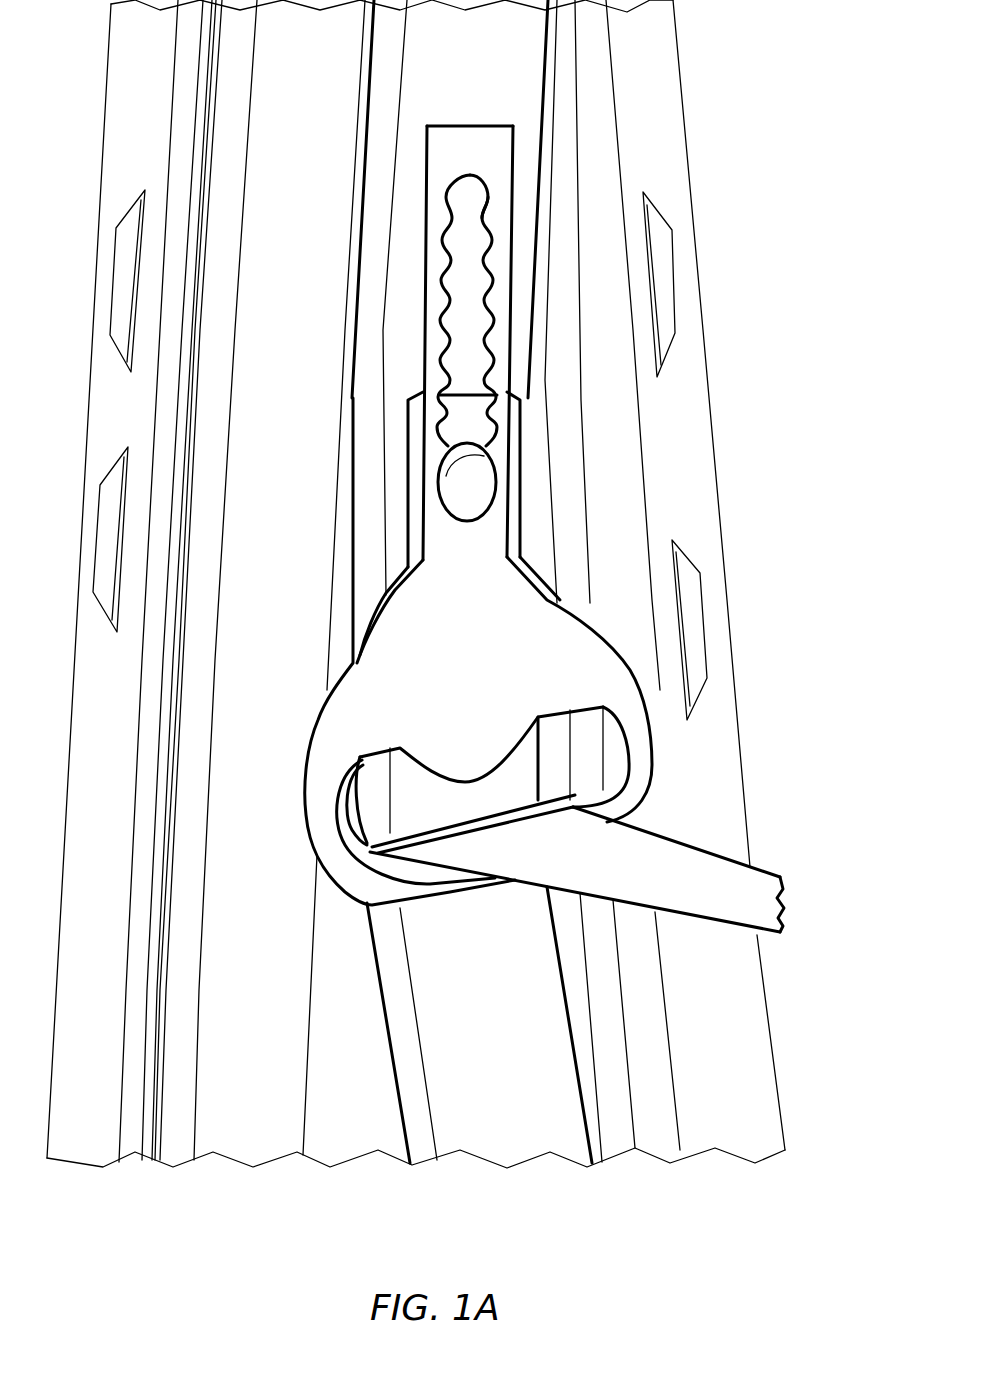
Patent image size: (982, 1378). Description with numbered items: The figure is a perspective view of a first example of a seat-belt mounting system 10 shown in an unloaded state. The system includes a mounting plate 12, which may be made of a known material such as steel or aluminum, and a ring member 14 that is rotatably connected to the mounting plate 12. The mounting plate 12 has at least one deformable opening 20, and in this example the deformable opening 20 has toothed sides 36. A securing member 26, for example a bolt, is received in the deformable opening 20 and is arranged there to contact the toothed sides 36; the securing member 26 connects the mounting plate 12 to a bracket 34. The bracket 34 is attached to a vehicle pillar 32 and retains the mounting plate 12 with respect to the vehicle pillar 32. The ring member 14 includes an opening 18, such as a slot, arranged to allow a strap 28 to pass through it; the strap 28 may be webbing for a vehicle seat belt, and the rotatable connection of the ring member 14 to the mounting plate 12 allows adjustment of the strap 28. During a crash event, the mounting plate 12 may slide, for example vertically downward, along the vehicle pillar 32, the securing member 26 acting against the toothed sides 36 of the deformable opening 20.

The seat-belt mounting system 10 is at (798, 86).
The mounting plate 12 is at (485, 137).
The ring member 14 is at (398, 657).
The opening 18 is at (413, 800).
The deformable opening 20 is at (468, 293).
The securing member 26 is at (473, 493).
The strap 28 is at (710, 870).
The vehicle pillar 32 is at (468, 66).
The bracket 34 is at (520, 405).
The toothed sides 36 is at (480, 212).